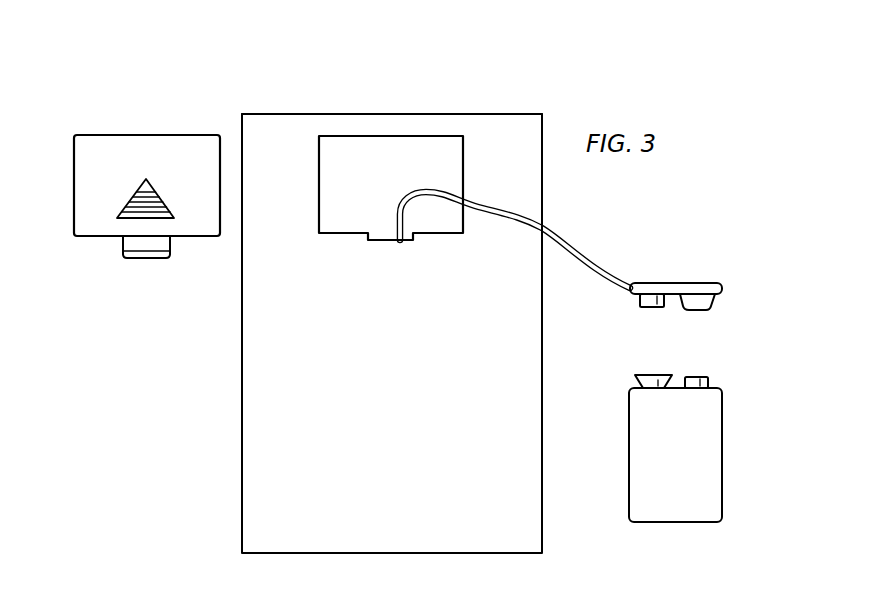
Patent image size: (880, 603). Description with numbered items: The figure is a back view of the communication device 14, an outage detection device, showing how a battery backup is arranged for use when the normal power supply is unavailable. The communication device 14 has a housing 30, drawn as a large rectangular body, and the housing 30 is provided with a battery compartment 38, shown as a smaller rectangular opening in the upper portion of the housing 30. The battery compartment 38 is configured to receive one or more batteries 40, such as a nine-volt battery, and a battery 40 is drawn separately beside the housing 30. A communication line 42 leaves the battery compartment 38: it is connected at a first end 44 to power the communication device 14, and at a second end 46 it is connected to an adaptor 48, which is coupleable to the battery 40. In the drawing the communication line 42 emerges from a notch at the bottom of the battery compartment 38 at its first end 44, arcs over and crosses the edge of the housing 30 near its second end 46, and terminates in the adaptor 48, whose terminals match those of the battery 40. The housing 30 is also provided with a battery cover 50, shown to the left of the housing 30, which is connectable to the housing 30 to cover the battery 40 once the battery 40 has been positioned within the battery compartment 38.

The communication device 14 is at (492, 112).
The housing 30 is at (246, 421).
The battery compartment 38 is at (378, 145).
The battery 40 is at (722, 455).
The communication line 42 is at (572, 247).
The first end 44 is at (393, 216).
The second end 46 is at (517, 222).
The adaptor 48 is at (676, 283).
The battery cover 50 is at (74, 184).